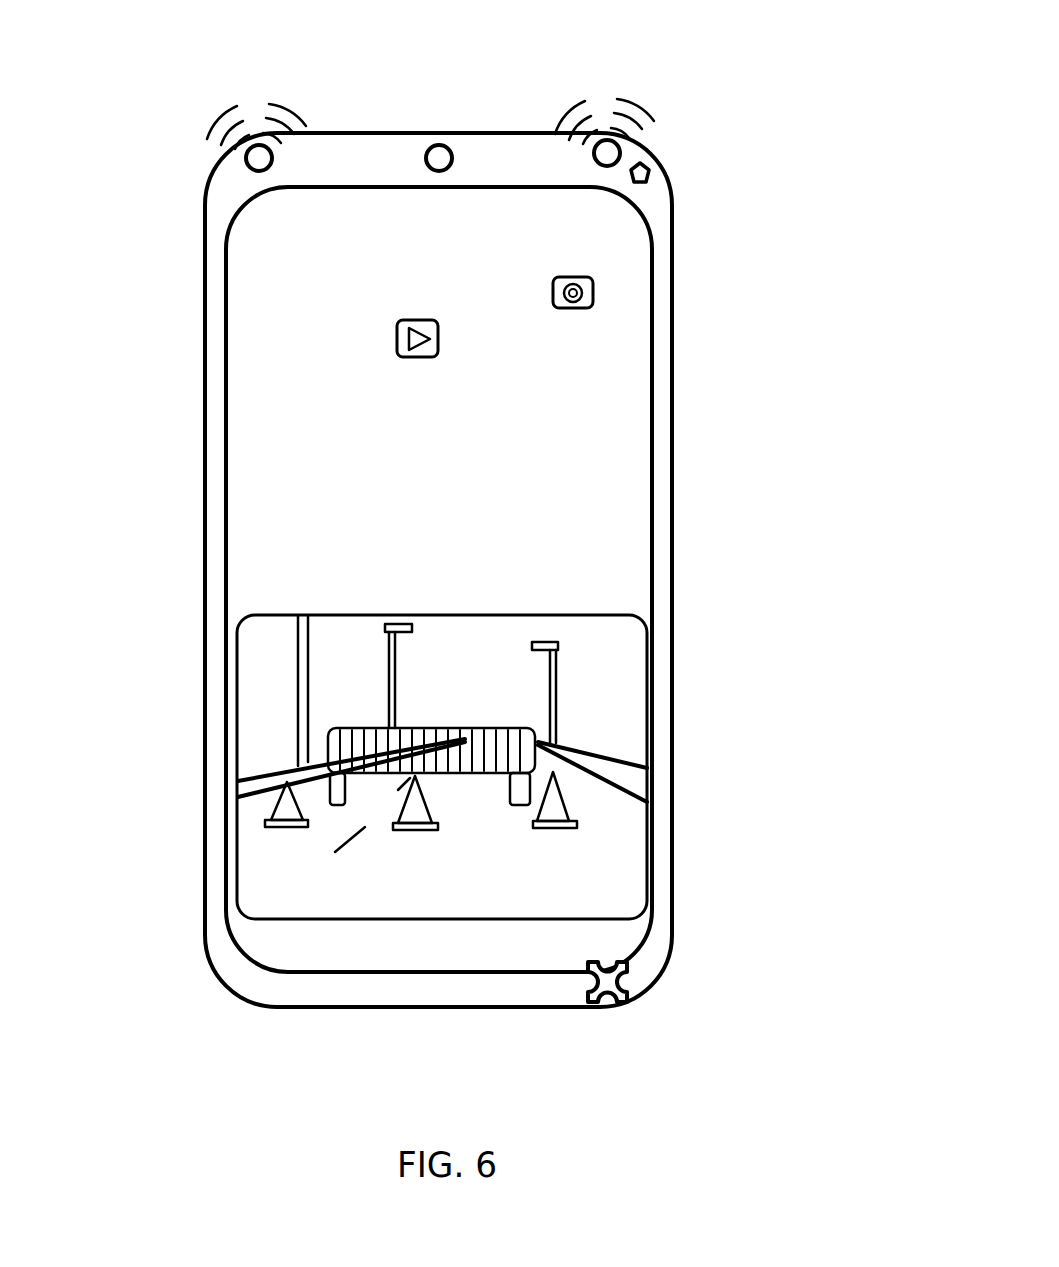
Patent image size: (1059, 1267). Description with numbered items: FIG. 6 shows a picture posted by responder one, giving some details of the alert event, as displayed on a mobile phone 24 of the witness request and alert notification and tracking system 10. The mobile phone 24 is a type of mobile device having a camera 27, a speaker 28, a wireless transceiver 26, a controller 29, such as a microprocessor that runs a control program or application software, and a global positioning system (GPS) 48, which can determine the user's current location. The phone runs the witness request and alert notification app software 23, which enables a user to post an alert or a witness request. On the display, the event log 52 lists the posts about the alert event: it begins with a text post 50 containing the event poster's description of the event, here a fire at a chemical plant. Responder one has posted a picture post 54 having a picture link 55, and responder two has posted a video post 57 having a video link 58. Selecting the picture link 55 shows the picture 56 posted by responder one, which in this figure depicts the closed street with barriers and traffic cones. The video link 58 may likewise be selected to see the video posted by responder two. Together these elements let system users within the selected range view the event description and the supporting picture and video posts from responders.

The witness request and alert notification and tracking system 10 is at (752, 255).
The witness request and alert notification app software 23 is at (660, 172).
The mobile phone 24 is at (232, 193).
The wireless transceiver 26 is at (607, 152).
The camera 27 is at (439, 158).
The speaker 28 is at (259, 158).
The controller 29 is at (640, 173).
The global positioning system (GPS) 48 is at (628, 982).
The text post 50 is at (258, 253).
The event log 52 is at (300, 349).
The picture post 54 is at (258, 296).
The picture link 55 is at (593, 293).
The picture 56 is at (567, 692).
The video post 57 is at (258, 346).
The video link 58 is at (438, 340).